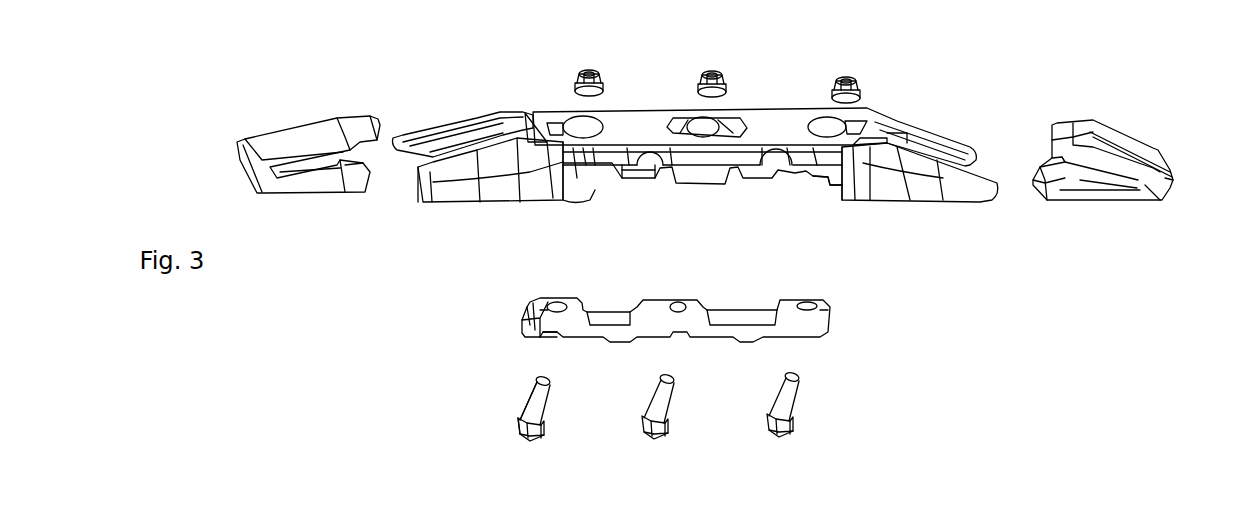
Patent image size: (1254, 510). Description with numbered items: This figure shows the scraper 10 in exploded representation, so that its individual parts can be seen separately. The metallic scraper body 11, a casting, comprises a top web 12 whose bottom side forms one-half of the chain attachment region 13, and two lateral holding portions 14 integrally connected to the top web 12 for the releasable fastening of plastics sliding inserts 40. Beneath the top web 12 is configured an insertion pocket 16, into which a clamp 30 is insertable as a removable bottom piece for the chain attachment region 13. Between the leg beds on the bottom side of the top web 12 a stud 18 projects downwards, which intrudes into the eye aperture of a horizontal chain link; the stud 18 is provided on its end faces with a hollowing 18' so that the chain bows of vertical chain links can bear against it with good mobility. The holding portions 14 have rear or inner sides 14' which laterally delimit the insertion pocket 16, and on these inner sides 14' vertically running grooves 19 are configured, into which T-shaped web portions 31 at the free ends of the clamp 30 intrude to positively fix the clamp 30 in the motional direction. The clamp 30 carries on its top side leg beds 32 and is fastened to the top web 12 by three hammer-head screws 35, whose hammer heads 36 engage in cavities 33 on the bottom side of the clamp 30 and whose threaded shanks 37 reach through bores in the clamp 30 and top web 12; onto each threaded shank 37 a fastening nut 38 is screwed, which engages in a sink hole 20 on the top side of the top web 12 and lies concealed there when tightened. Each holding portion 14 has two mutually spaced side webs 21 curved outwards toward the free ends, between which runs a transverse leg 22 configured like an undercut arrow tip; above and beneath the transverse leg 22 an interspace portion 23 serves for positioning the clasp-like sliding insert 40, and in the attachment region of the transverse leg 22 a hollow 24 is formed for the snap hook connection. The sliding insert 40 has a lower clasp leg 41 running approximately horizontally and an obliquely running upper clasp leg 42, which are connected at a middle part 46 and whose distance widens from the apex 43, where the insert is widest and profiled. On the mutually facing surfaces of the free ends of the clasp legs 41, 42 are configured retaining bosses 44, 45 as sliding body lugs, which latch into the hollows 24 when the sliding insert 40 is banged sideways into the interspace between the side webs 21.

The scraper 10 is at (1100, 116).
The scraper body 11 is at (765, 104).
The top web 12 is at (645, 123).
The chain attachment region 13 is at (911, 203).
The holding portion 14 is at (667, 140).
The rear side 14' is at (835, 211).
The insertion pocket 16 is at (617, 217).
The stud 18 is at (661, 220).
The hollowing 18' is at (636, 222).
The groove 19 is at (831, 184).
The sink hole 20 is at (571, 127).
The side web 21 is at (431, 135).
The transverse leg 22 is at (421, 190).
The interspace portion 23 is at (471, 128).
The hollow 24 is at (517, 120).
The clamp 30 is at (818, 353).
The T-shaped web portion 31 is at (527, 307).
The leg bed 32 is at (600, 317).
The cavity 33 is at (553, 335).
The hammer-head screw 35 is at (519, 402).
The hammer head 36 is at (522, 428).
The threaded shank 37 is at (538, 407).
The fastening nut 38 is at (720, 66).
The sliding insert 40 is at (325, 196).
The lower clasp leg 41 is at (1123, 193).
The upper clasp leg 42 is at (1130, 148).
The apex 43 is at (1172, 185).
The retaining boss 44 is at (1048, 156).
The retaining boss 45 is at (1067, 158).
The middle part 46 is at (1152, 192).